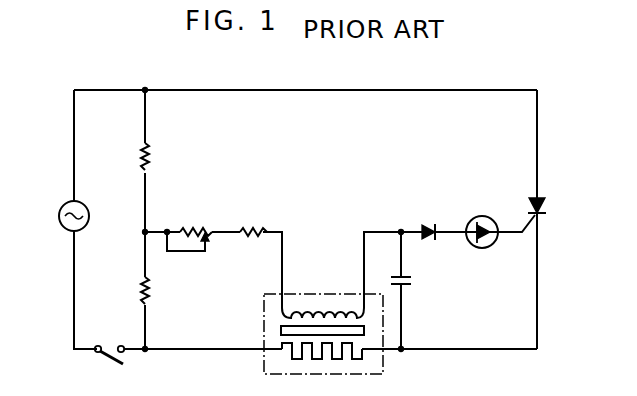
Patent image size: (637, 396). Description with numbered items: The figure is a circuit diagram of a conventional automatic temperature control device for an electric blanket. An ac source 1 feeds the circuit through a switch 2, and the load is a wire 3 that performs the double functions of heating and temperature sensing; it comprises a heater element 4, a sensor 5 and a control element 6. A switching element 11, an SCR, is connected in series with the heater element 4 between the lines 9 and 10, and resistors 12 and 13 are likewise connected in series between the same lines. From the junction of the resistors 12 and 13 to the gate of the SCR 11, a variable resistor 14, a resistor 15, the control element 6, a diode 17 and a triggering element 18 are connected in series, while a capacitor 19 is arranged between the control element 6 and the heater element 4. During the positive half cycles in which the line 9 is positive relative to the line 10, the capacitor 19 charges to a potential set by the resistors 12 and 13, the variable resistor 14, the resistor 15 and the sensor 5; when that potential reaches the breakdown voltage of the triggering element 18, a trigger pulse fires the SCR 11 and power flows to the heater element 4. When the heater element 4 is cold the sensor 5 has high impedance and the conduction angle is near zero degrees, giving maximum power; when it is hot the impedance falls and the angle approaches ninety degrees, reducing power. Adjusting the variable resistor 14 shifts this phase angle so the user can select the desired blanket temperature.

The ac source 1 is at (58, 213).
The switch 2 is at (107, 344).
The wire having double functions of heating and temperature sensing 3 is at (301, 292).
The heater element 4 is at (282, 355).
The sensor 5 is at (281, 331).
The control element 6 is at (280, 313).
The line 9 is at (207, 89).
The line 10 is at (184, 351).
The switching element 11 is at (546, 208).
The resistor 12 is at (151, 158).
The resistor 13 is at (150, 292).
The variable resistor 14 is at (200, 229).
The resistor 15 is at (258, 229).
The diode 17 is at (430, 223).
The triggering element 18 is at (484, 217).
The capacitor 19 is at (405, 286).